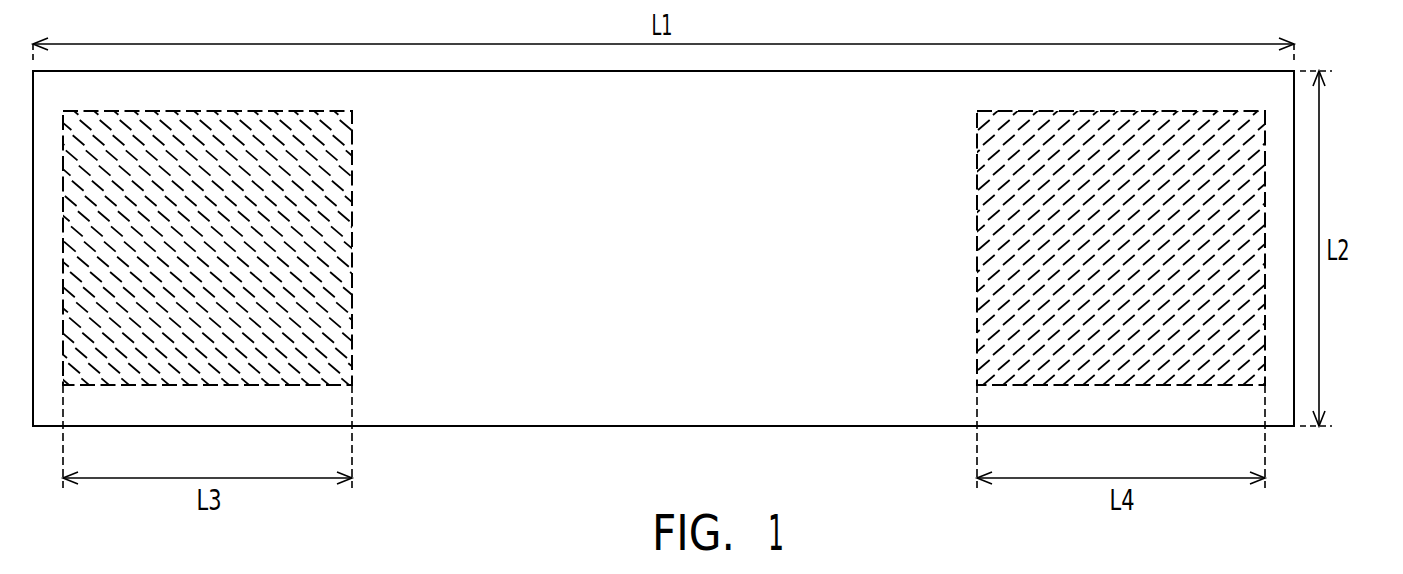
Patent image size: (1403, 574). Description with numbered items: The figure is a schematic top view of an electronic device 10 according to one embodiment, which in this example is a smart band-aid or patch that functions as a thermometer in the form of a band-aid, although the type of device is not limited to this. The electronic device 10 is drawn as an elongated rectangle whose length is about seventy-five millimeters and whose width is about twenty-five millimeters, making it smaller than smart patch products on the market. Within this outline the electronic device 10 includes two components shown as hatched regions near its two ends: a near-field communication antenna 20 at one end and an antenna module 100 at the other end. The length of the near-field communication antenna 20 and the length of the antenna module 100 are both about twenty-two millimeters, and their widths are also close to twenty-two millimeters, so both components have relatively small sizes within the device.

The electronic device 10 is at (1360, 512).
The near-field communication antenna 20 is at (198, 386).
The antenna module 100 is at (1150, 386).